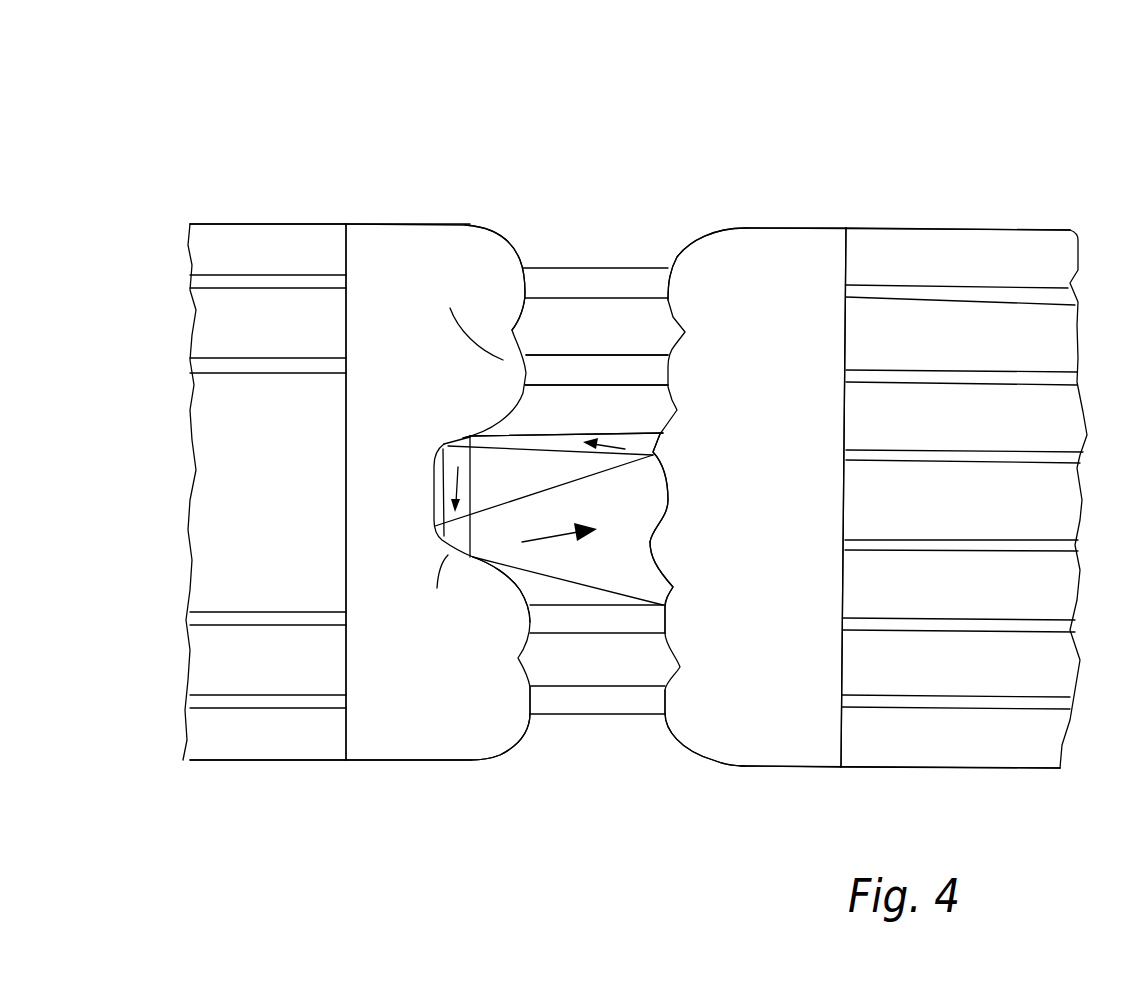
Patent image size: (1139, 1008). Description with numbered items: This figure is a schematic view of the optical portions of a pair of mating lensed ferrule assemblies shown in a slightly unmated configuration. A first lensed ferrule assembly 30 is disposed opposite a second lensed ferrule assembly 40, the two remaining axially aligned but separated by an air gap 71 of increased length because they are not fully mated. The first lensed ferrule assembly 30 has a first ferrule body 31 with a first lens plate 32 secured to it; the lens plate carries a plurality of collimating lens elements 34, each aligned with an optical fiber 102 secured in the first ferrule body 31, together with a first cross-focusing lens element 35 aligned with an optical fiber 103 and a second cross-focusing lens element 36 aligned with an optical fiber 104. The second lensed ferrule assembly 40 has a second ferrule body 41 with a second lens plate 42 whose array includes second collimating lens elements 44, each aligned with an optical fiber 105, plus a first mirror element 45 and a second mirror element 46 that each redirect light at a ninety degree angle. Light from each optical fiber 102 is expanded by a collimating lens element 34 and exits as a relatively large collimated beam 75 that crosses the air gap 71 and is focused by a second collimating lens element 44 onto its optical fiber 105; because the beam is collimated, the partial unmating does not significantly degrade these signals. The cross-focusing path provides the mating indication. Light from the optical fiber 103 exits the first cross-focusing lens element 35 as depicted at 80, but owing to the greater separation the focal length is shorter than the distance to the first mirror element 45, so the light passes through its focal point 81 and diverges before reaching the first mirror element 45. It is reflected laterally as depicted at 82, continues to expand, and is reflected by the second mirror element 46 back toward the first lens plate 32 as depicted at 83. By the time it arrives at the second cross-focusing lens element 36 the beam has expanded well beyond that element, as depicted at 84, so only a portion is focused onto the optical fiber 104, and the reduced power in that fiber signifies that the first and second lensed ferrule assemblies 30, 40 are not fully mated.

The first lensed ferrule assembly 30 is at (852, 113).
The first ferrule body 31 is at (962, 228).
The first lens plate 32 is at (748, 238).
The collimating lens element 34 is at (697, 283).
The first cross-focusing lens element 35 is at (680, 460).
The second cross-focusing lens element 36 is at (678, 548).
The second lensed ferrule assembly 40 is at (368, 152).
The second ferrule body 41 is at (242, 221).
The second lens plate 42 is at (423, 221).
The second collimating lens element 44 is at (516, 292).
The first mirror element 45 is at (457, 433).
The second mirror element 46 is at (447, 542).
The air gap 71 is at (594, 187).
The collimated beam 75 is at (617, 293).
The light exiting the first cross-focusing lens element 80 is at (622, 437).
The focal point 81 is at (505, 440).
The light reflected by the first mirror element 82 is at (443, 450).
The light reflected by the second mirror element 83 is at (514, 615).
The expanded light beam 84 is at (573, 500).
The optical fiber 102 is at (1023, 288).
The optical fiber 103 is at (1032, 453).
The optical fiber 104 is at (1040, 543).
The optical fiber 105 is at (303, 286).